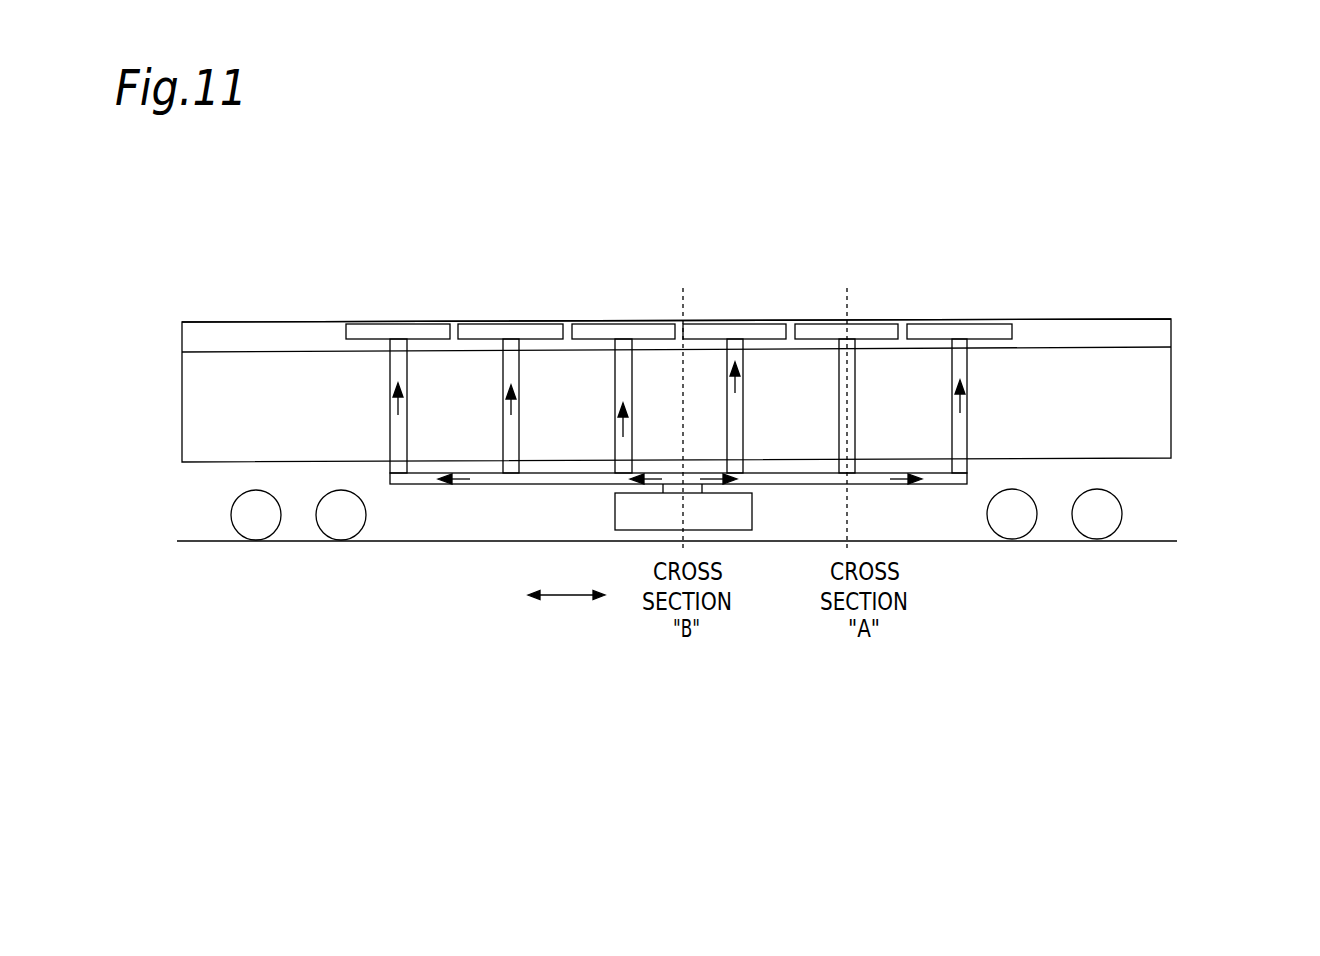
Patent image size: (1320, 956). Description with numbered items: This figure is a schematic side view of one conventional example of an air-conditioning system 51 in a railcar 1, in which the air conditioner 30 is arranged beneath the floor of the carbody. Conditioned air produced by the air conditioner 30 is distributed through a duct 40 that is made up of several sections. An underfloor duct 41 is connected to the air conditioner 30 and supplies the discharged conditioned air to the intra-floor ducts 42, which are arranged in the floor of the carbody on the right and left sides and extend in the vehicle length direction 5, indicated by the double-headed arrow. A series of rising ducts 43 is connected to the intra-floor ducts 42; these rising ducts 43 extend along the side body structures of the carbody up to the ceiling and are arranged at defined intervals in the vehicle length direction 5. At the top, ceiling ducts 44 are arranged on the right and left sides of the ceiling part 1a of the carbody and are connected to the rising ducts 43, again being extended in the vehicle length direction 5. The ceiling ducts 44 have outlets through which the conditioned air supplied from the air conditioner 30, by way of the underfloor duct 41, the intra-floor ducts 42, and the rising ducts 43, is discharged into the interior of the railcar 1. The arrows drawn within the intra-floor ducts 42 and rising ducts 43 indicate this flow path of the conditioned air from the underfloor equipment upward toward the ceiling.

The railcar 1 is at (1172, 387).
The ceiling part 1a is at (1097, 327).
The vehicle length direction 5 is at (572, 595).
The air conditioner 30 is at (623, 518).
The duct 40 is at (641, 411).
The underfloor duct 41 is at (698, 488).
The intra-floor duct 42 is at (503, 486).
The rising duct 43 is at (390, 437).
The ceiling duct 44 is at (368, 330).
The air-conditioning system 51 is at (728, 535).